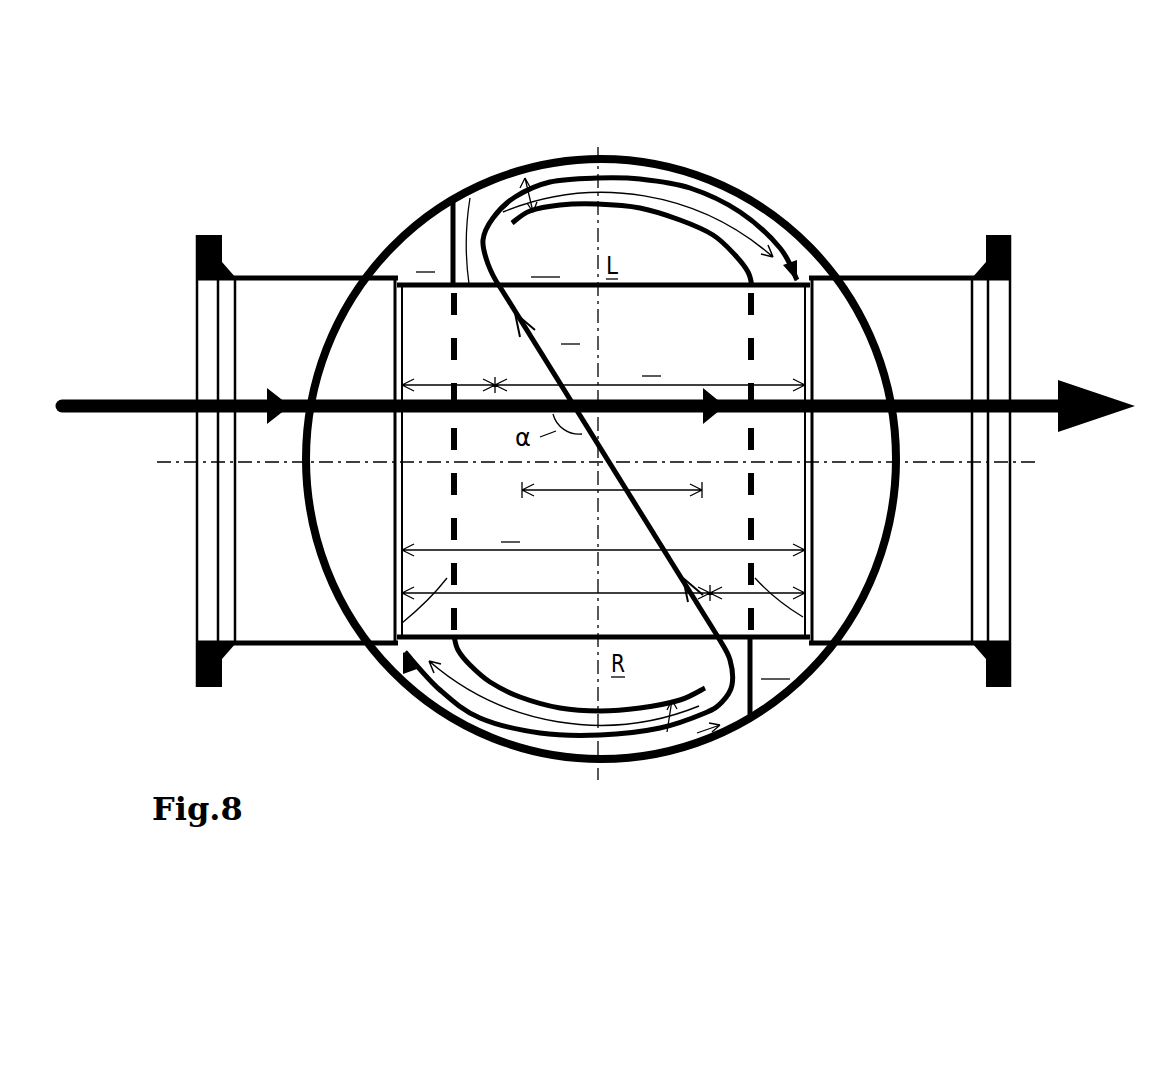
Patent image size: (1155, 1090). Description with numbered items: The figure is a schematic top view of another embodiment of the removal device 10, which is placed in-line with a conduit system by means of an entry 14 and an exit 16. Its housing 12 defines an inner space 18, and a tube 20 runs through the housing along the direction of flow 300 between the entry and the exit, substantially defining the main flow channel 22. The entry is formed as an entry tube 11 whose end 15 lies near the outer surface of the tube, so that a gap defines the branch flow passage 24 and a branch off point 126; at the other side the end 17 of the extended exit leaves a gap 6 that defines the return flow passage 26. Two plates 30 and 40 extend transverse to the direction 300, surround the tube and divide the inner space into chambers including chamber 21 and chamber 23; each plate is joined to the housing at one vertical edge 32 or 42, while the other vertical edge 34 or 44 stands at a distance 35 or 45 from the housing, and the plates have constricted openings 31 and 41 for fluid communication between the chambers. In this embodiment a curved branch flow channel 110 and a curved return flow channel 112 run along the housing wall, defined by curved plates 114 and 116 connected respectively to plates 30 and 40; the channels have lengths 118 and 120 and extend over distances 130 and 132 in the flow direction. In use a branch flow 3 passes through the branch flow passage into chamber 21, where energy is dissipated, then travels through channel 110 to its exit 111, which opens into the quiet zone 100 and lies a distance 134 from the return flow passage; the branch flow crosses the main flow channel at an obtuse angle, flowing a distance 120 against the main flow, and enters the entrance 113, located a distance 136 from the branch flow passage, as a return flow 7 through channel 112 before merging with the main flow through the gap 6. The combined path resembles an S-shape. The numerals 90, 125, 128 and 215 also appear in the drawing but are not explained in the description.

The branch flow 3 is at (525, 733).
The gap 6 is at (812, 357).
The return flow 7 is at (700, 247).
The removal device 10 is at (391, 767).
The entry tube 11 is at (262, 276).
The housing 12 is at (403, 237).
The entry 14 is at (183, 371).
The end of entry tube 15 is at (392, 332).
The exit 16 is at (1038, 364).
The end of exit tube 17 is at (813, 318).
The inner space 18 is at (510, 529).
The tube 20 is at (470, 200).
The chamber 21 is at (425, 259).
The main flow channel 22 is at (603, 461).
The chamber 23 is at (570, 331).
The branch flow passage 24 is at (395, 277).
The return flow passage 26 is at (808, 497).
The plate 30 is at (390, 652).
The constricted opening 31 is at (472, 692).
The vertical edge of plate 30 32 is at (451, 203).
The vertical edge of plate 30 34 is at (697, 727).
The distance 35 is at (668, 733).
The plate 40 is at (813, 642).
The constricted opening 41 is at (755, 218).
The vertical edge of plate 40 42 is at (727, 717).
The vertical edge of plate 40 44 is at (524, 176).
The distance 45 is at (519, 196).
The outlet guide 90 is at (812, 390).
The quiet zone 100 is at (609, 443).
The branch flow channel 110 is at (482, 710).
The exit of branch flow channel 111 is at (723, 710).
The return flow channel 112 is at (638, 186).
The entrance of return flow channel 113 is at (502, 195).
The plate 114 is at (493, 684).
The plate 116 is at (637, 212).
The length of branch flow channel 118 is at (563, 750).
The length of return flow channel 120 is at (563, 492).
The chamber width dimension 125 is at (503, 550).
The branch off point 126 is at (397, 670).
The upper outlet edge 128 is at (809, 285).
The distance 130 is at (496, 593).
The distance 132 is at (538, 383).
The distance 134 is at (731, 592).
The distance 136 is at (446, 382).
The lower partition wall 215 is at (770, 678).
The direction of flow 300 is at (283, 400).